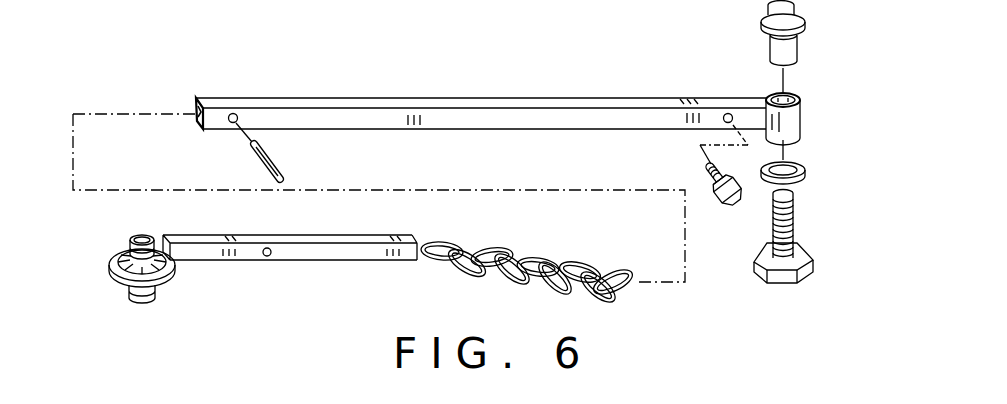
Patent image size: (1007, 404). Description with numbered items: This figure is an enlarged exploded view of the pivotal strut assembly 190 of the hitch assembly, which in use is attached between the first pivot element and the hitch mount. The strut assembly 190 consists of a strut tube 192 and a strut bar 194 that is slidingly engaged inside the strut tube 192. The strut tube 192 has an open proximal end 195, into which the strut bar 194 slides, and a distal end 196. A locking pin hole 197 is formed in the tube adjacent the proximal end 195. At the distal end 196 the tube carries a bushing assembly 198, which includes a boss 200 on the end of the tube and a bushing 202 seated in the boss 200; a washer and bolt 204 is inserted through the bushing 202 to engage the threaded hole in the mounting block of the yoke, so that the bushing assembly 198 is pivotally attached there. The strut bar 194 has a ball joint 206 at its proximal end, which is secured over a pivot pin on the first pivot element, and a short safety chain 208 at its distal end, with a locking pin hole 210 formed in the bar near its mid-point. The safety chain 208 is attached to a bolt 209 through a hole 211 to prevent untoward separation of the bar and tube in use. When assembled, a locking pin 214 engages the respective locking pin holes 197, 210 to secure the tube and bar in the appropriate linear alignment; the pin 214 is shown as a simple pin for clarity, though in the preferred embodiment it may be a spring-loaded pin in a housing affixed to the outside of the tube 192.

The strut assembly 190 is at (518, 88).
The strut tube 192 is at (317, 100).
The strut bar 194 is at (360, 262).
The open proximal end 195 is at (196, 112).
The distal end 196 is at (766, 97).
The locking pin hole 197 is at (230, 124).
The bushing assembly 198 is at (809, 99).
The boss 200 is at (790, 122).
The bushing 202 is at (787, 48).
The washer and bolt 204 is at (788, 221).
The ball joint 206 is at (120, 288).
The safety chain 208 is at (538, 254).
The bolt 209 is at (731, 199).
The locking pin hole 210 is at (272, 252).
The hole 211 is at (726, 112).
The locking pin 214 is at (275, 158).